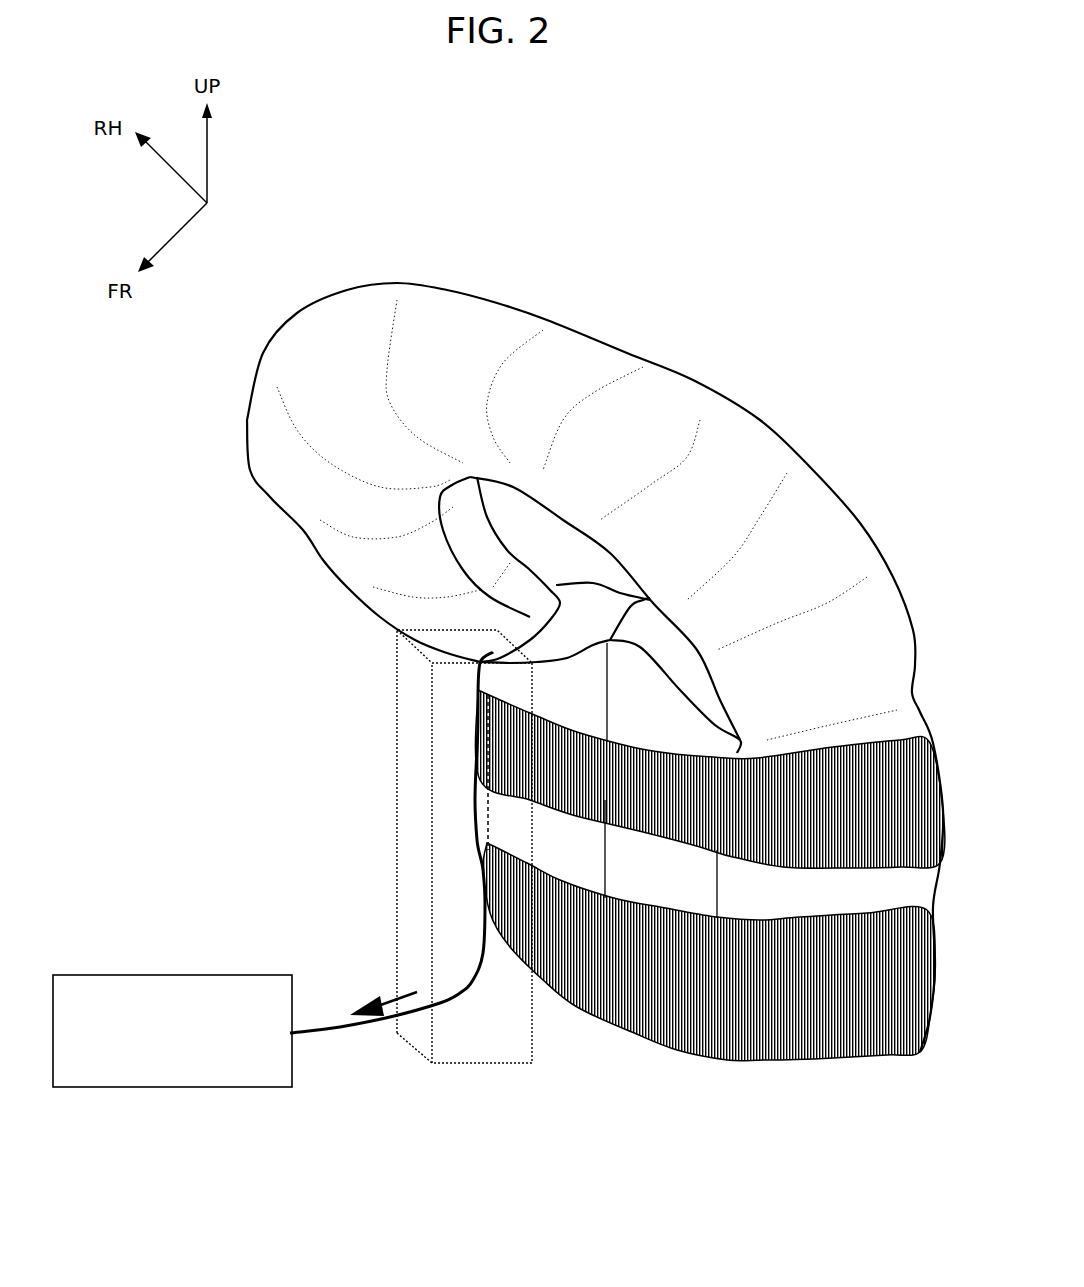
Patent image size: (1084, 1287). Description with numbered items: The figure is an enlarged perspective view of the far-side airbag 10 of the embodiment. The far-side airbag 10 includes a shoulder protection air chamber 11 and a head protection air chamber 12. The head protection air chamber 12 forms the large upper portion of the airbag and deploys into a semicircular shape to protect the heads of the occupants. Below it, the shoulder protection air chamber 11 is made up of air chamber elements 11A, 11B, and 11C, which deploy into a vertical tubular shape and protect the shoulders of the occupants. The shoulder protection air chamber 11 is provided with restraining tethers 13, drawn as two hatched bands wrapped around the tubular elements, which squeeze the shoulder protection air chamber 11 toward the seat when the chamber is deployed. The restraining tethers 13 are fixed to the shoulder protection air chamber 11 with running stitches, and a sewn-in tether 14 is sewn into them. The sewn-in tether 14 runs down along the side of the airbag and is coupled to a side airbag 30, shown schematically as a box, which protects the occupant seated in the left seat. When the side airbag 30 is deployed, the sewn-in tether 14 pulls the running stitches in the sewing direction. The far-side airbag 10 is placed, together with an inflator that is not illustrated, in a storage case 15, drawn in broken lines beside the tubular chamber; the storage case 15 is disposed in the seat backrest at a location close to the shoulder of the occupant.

The far-side airbag 10 is at (845, 195).
The shoulder protection air chamber 11 is at (637, 939).
The air chamber element 11A is at (553, 843).
The air chamber element 11B is at (637, 860).
The air chamber element 11C is at (730, 880).
The head protection air chamber 12 is at (583, 363).
The restraining tether 13 is at (863, 823).
The sewn-in tether 14 is at (340, 1037).
The storage case 15 is at (408, 820).
The side airbag 30 is at (170, 975).